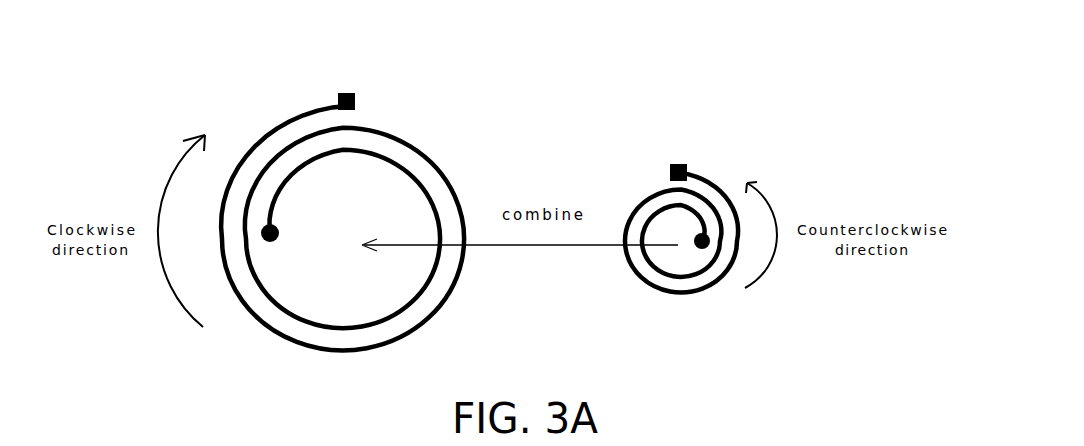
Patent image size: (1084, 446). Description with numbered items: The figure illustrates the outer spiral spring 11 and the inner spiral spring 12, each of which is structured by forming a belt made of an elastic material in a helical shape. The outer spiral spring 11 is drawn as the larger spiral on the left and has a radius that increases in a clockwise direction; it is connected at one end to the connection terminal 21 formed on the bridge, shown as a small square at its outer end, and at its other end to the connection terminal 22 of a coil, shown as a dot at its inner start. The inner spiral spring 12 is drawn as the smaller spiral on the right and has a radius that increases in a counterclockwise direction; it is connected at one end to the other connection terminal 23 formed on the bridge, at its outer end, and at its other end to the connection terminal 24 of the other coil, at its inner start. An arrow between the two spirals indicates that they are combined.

The outer spiral spring 11 is at (447, 83).
The inner spiral spring 12 is at (730, 141).
The connection terminal 21 is at (351, 92).
The connection terminal 22 is at (279, 229).
The connection terminal 23 is at (671, 174).
The connection terminal 24 is at (698, 249).